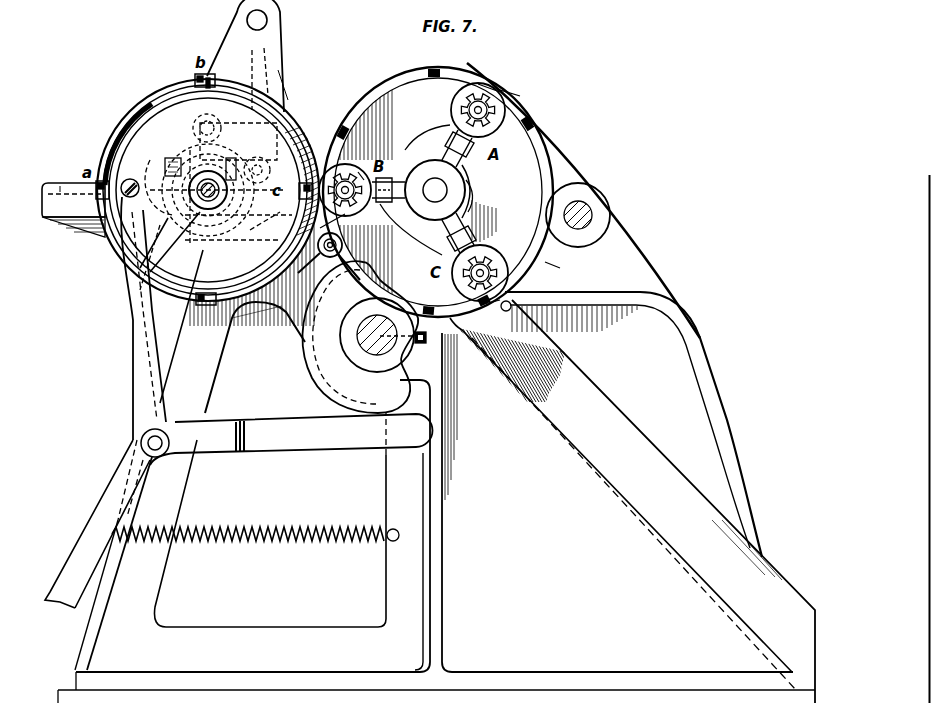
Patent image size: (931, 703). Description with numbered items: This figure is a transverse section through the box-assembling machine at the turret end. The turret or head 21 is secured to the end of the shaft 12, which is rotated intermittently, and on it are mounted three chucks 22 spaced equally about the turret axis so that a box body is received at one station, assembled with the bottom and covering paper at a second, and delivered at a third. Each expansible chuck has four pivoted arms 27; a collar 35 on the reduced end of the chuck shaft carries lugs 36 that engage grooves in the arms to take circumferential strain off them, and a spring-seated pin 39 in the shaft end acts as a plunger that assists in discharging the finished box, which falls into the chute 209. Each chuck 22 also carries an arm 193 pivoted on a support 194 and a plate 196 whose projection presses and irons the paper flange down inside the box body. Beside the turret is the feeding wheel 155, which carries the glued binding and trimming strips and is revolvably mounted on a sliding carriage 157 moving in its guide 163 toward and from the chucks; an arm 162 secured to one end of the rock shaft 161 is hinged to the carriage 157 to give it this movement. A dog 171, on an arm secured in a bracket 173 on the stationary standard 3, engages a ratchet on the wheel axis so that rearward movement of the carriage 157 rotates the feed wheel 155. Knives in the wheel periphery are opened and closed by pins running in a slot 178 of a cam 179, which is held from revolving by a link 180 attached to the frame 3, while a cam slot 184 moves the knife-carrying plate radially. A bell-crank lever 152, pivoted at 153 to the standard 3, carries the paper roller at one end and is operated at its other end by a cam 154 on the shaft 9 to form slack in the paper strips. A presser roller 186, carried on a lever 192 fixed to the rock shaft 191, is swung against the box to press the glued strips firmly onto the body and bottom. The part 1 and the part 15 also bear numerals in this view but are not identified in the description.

The base 1 is at (64, 690).
The standard 3 is at (182, 492).
The shaft 9 is at (372, 355).
The shaft 12 is at (435, 190).
The shaft 15 is at (592, 214).
The turret 21 is at (438, 192).
The chucks 22 is at (462, 116).
The pivoted arms 27 is at (498, 83).
The collar 35 is at (500, 100).
The lugs 36 is at (512, 106).
The pin 39 is at (366, 180).
The bell-crank lever 152 is at (291, 439).
The pivot 153 is at (141, 443).
The cam 154 is at (360, 337).
The feeding wheel 155 is at (207, 200).
The sliding carriage 157 is at (60, 188).
The shaft 161 is at (268, 20).
The arm 162 is at (278, 54).
The guide 163 is at (73, 210).
The dog 171 is at (172, 138).
The bracket 173 is at (283, 80).
The slot 178 is at (125, 130).
The cam 179 is at (150, 108).
The link 180 is at (133, 352).
The cam slot 184 is at (133, 272).
The presser roller 186 is at (345, 251).
The rock shaft 191 is at (256, 200).
The lever 192 is at (257, 316).
The arm 193 is at (445, 141).
The support 194 is at (478, 194).
The plate 196 is at (456, 124).
The chute 209 is at (627, 501).